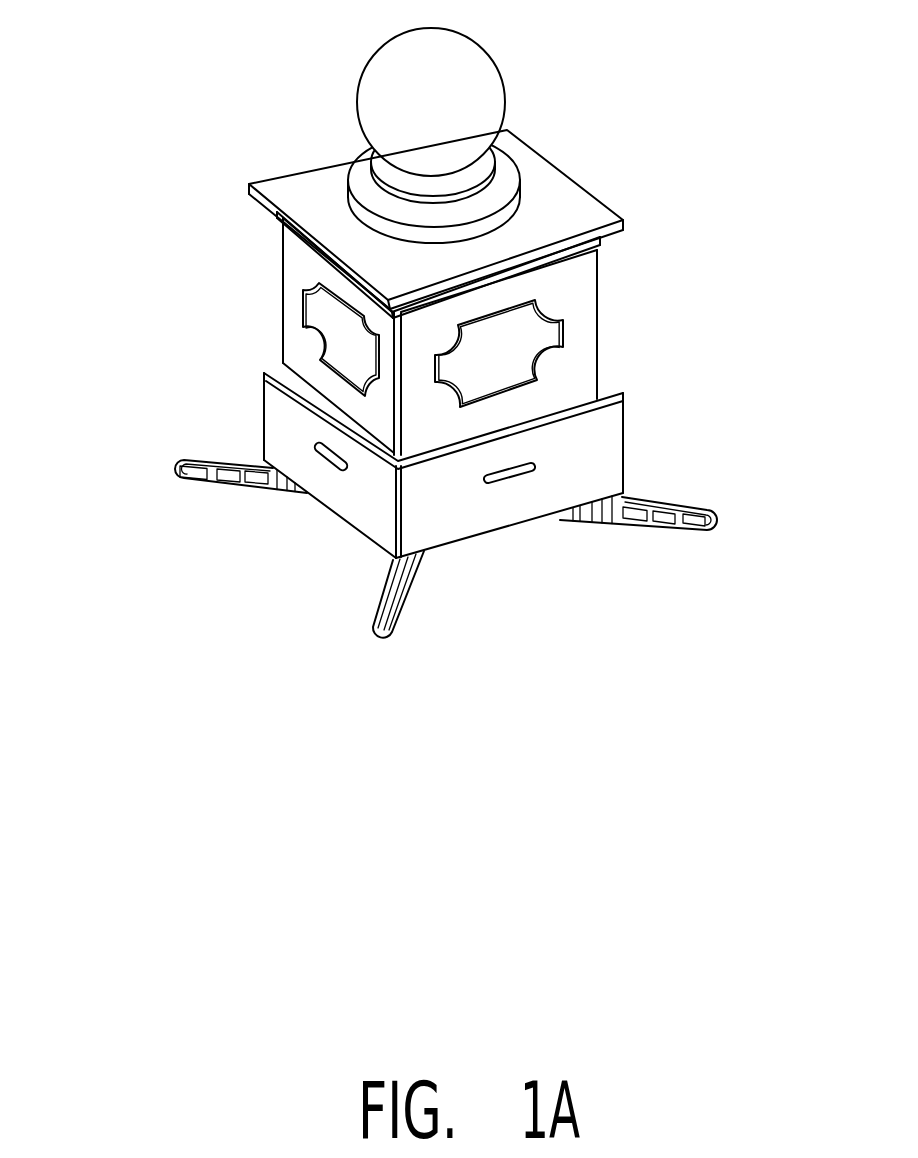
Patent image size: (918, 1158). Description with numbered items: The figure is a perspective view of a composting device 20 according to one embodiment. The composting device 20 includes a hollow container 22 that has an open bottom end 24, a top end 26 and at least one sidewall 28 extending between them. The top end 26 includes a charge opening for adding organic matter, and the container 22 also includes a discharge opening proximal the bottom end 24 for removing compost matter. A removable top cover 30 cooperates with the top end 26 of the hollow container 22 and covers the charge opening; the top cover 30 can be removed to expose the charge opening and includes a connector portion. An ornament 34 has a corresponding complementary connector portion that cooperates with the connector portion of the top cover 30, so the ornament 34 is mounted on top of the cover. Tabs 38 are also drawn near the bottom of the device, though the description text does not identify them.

The composting device 20 is at (579, 336).
The hollow container 22 is at (573, 465).
The open bottom end 24 is at (462, 534).
The top end 26 is at (575, 265).
The sidewall 28 is at (591, 368).
The top cover 30 is at (560, 219).
The ornament 34 is at (609, 135).
The mounting tab 38 is at (449, 580).